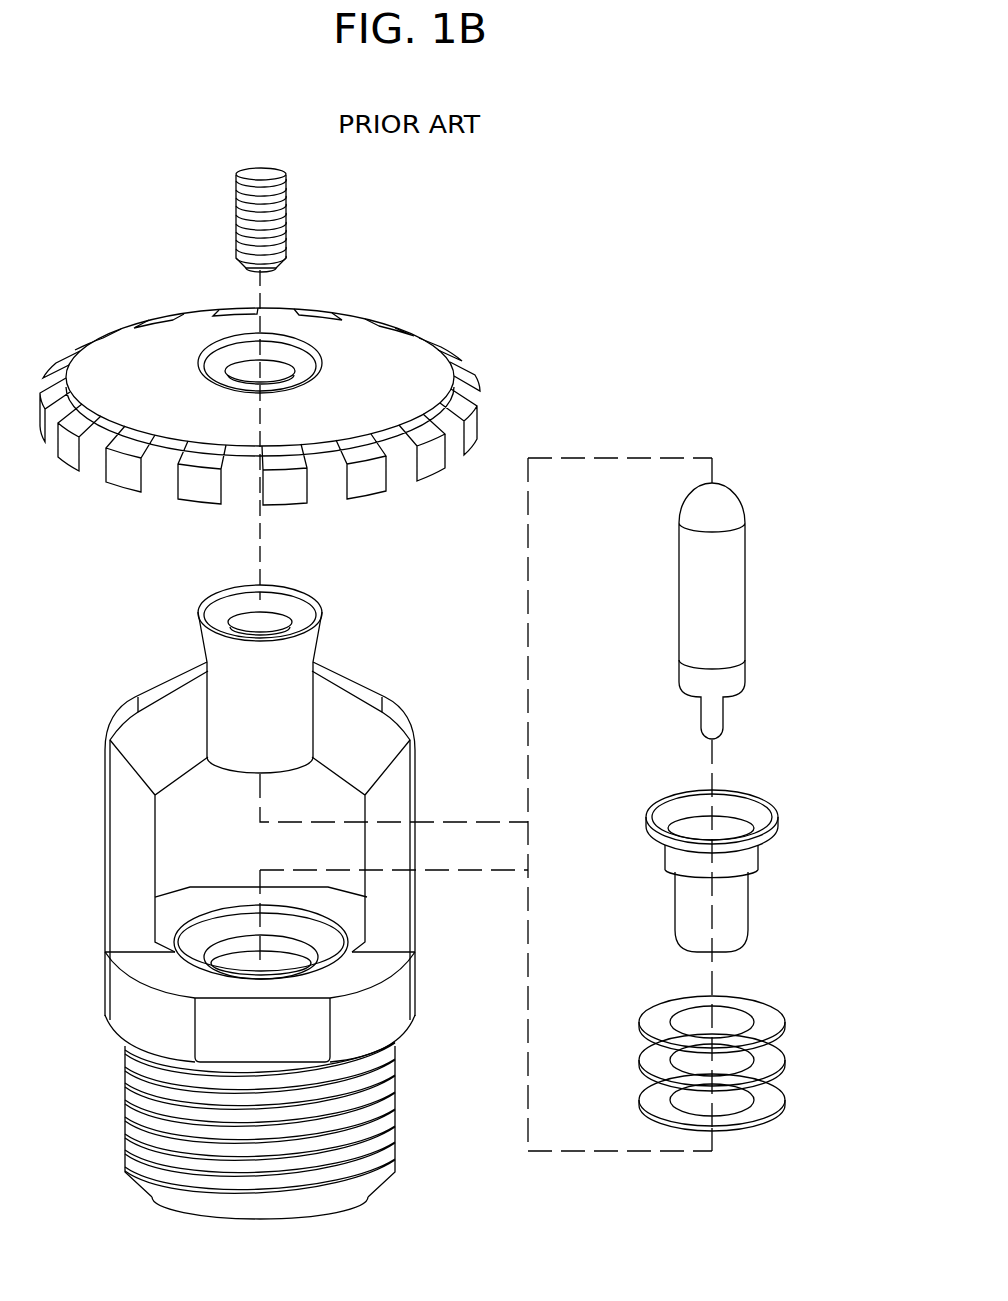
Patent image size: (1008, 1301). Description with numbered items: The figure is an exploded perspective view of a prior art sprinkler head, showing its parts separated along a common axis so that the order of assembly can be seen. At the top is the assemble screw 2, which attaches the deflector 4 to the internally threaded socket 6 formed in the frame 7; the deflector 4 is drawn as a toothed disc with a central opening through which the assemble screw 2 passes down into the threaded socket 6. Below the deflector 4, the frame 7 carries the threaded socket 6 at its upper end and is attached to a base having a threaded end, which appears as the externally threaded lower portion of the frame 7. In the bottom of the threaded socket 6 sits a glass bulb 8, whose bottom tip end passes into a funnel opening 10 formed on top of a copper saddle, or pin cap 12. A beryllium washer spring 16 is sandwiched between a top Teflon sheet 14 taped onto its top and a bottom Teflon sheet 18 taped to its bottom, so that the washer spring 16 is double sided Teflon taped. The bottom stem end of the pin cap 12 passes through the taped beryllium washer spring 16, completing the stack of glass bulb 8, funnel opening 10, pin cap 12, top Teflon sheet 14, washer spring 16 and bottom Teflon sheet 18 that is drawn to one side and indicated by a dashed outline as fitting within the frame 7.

The assemble screw 2 is at (282, 221).
The deflector 4 is at (375, 353).
The internally threaded socket 6 is at (288, 657).
The frame 7 is at (373, 724).
The glass bulb 8 is at (733, 555).
The funnel opening 10 is at (757, 798).
The copper saddle (pin cap) 12 is at (733, 910).
The top Teflon sheet 14 is at (763, 1015).
The beryllium washer spring 16 is at (763, 1060).
The bottom Teflon sheet 18 is at (767, 1102).